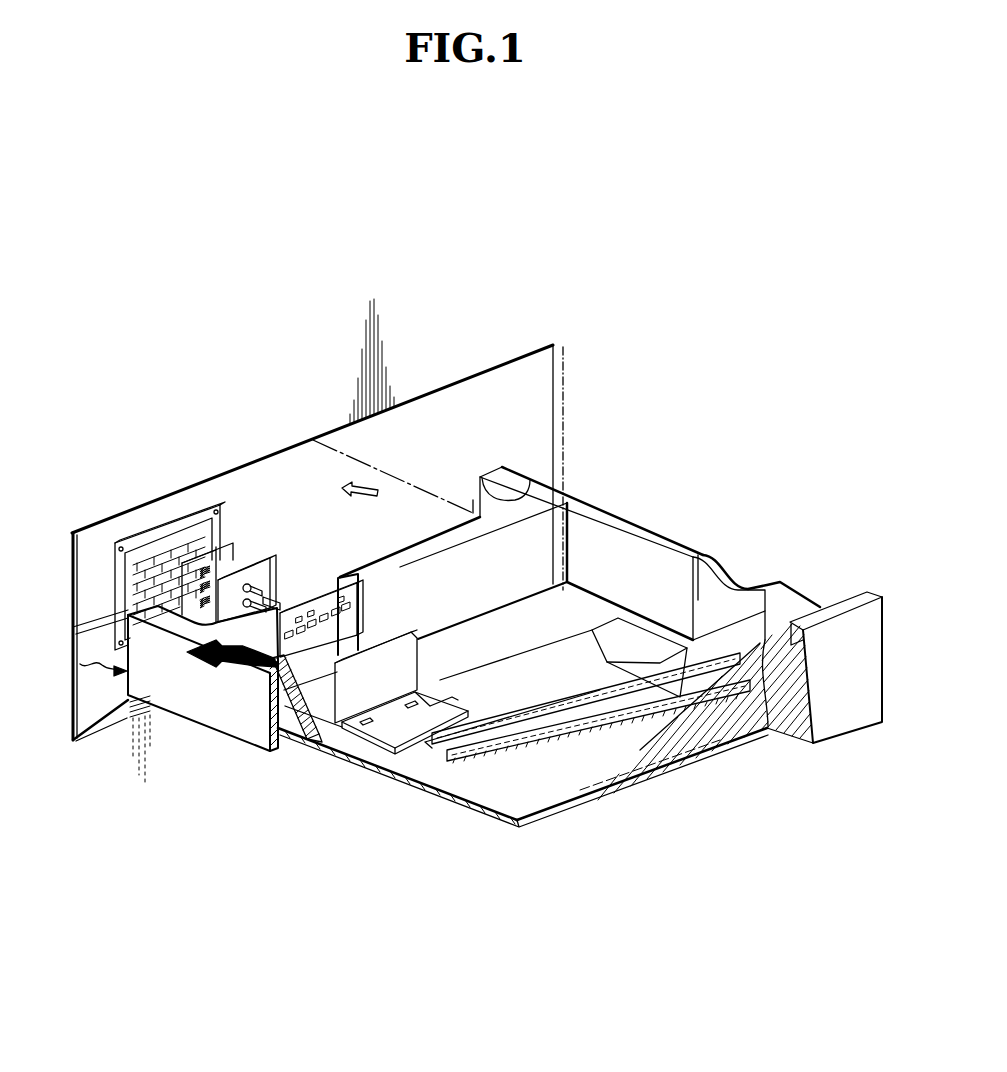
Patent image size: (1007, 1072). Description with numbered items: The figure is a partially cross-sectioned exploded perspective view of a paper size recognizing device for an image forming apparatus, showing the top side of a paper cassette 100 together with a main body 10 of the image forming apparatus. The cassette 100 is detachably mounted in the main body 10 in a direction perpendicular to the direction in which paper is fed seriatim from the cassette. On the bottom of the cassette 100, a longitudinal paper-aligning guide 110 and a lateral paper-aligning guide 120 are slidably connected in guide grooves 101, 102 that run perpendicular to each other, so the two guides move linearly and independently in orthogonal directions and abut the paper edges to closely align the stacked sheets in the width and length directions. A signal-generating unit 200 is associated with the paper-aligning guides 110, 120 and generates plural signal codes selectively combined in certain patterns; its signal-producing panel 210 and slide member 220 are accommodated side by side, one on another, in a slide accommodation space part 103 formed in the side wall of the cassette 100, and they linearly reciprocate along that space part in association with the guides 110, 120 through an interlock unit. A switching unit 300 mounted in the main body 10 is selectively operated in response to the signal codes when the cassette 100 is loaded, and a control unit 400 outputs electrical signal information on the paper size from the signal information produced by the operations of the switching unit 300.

The main body 10 is at (462, 349).
The paper cassette 100 is at (569, 667).
The guide groove 101 is at (472, 752).
The guide groove 102 is at (310, 738).
The slide accommodation space part 103 is at (340, 578).
The longitudinal paper-aligning guide 110 is at (647, 672).
The lateral paper-aligning guide 120 is at (362, 687).
The signal-generating unit 200 is at (292, 604).
The signal-producing panel 210 is at (358, 616).
The slide member 220 is at (312, 704).
The switching unit 300 is at (252, 556).
The control unit 400 is at (142, 532).